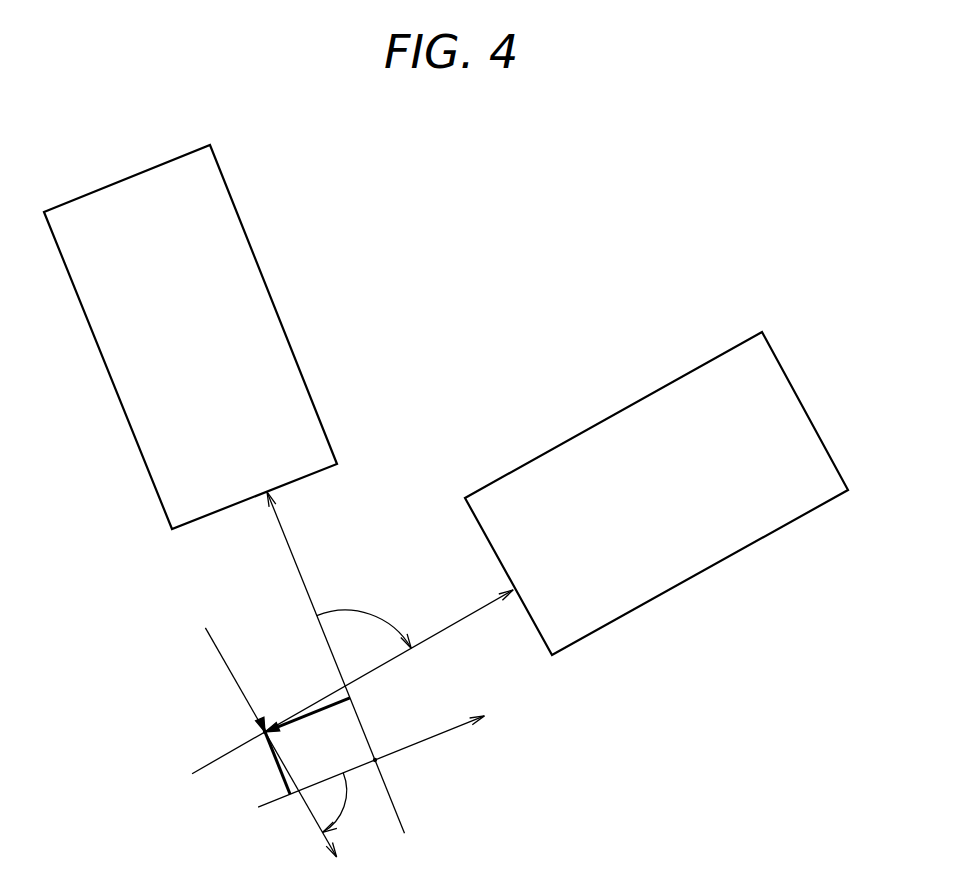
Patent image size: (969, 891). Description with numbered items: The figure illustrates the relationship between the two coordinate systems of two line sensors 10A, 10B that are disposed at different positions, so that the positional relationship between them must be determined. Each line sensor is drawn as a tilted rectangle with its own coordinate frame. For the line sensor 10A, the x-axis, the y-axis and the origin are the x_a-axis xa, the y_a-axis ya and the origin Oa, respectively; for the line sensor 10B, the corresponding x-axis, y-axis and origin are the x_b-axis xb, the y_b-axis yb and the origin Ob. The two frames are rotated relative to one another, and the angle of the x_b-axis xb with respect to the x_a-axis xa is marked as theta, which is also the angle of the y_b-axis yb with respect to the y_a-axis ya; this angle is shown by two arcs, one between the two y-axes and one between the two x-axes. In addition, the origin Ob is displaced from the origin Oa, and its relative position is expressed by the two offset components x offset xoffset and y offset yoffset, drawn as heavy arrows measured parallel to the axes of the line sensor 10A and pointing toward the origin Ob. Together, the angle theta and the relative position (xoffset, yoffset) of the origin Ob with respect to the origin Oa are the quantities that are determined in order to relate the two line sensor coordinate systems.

The line sensor 10A is at (223, 172).
The line sensor 10B is at (778, 355).
The origin Oa is at (397, 776).
The origin Ob is at (246, 721).
The x_a-axis xa is at (387, 754).
The y_a-axis ya is at (336, 660).
The x_b-axis xb is at (286, 752).
The y_b-axis yb is at (358, 682).
The x offset xoffset is at (303, 719).
The y offset yoffset is at (276, 766).